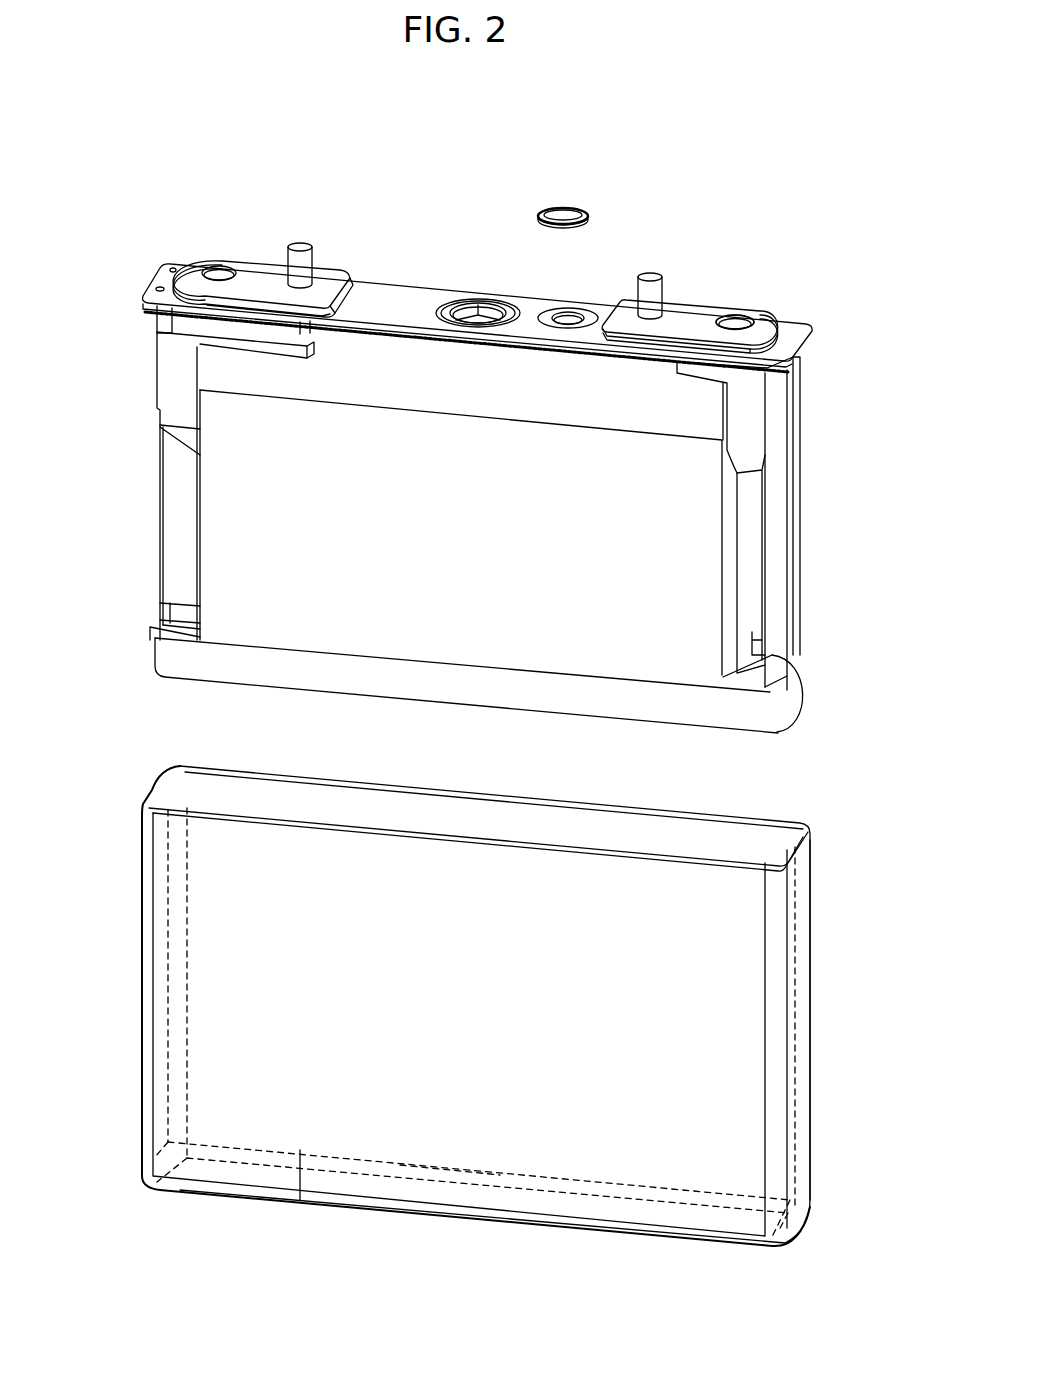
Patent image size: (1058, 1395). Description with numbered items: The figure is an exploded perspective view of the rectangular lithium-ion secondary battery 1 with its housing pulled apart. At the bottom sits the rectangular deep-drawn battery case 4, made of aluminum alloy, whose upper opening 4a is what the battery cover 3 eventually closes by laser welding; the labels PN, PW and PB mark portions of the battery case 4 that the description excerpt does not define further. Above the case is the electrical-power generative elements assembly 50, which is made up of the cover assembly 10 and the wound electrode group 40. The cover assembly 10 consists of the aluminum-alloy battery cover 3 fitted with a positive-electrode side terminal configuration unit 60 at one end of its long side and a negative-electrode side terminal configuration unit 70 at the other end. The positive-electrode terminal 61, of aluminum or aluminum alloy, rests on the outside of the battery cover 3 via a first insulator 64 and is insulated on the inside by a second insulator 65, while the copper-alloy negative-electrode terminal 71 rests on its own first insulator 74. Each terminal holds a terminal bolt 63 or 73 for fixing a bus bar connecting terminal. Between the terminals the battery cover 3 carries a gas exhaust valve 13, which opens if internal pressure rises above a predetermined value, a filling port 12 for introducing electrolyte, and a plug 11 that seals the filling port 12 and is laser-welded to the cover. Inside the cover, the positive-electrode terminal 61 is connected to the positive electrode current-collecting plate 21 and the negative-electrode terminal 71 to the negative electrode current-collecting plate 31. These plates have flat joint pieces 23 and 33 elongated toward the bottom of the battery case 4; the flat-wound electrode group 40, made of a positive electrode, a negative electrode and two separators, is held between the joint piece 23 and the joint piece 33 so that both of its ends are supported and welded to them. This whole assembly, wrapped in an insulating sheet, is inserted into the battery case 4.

The lithium-ion secondary battery 1 is at (623, 165).
The battery cover 3 is at (385, 282).
The battery case 4 is at (162, 1007).
The opening 4a is at (800, 808).
The cover assembly 10 is at (142, 292).
The plug 11 is at (564, 215).
The filling port 12 is at (568, 316).
The gas exhaust valve 13 is at (478, 299).
The positive electrode current-collecting plate 21 is at (157, 403).
The joint piece 23 is at (178, 521).
The negative electrode current-collecting plate 31 is at (770, 410).
The joint piece 33 is at (753, 560).
The electrode group 40 is at (230, 617).
The electrical-power generative elements assembly 50 is at (52, 272).
The positive-electrode side terminal configuration unit 60 is at (240, 222).
The positive-electrode terminal 61 is at (198, 268).
The terminal bolt 63 is at (302, 243).
The first insulator 64 is at (344, 270).
The second insulator 65 is at (160, 318).
The negative-electrode side terminal configuration unit 70 is at (778, 250).
The negative-electrode terminal 71 is at (702, 304).
The terminal bolt 73 is at (648, 276).
The first insulator 74 is at (766, 318).
The side wall of case PN is at (806, 1025).
The front wall of case PW is at (310, 1100).
The bottom wall of case PB is at (433, 1190).